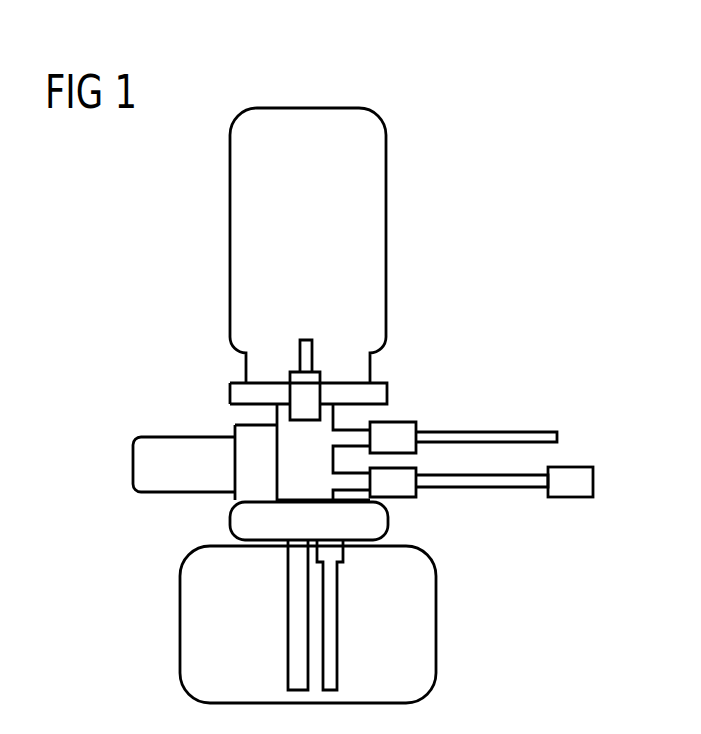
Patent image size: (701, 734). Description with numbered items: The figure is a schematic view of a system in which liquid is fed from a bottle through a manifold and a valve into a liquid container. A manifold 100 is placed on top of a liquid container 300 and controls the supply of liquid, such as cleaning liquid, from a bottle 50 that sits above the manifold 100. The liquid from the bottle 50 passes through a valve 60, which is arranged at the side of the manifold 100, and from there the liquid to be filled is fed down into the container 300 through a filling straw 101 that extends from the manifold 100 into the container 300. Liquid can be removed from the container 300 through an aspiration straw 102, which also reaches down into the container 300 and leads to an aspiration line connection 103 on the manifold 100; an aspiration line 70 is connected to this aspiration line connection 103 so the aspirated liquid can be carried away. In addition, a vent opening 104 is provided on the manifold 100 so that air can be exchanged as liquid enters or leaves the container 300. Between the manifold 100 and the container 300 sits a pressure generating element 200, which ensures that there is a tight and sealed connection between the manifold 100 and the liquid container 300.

The bottle 50 is at (377, 225).
The valve 60 is at (182, 448).
The aspiration line 70 is at (570, 475).
The manifold 100 is at (377, 393).
The filling straw 101 is at (298, 638).
The aspiration straw 102 is at (330, 588).
The aspiration line connection 103 is at (358, 480).
The vent opening 104 is at (358, 435).
The pressure generating element 200 is at (240, 522).
The liquid container 300 is at (427, 653).